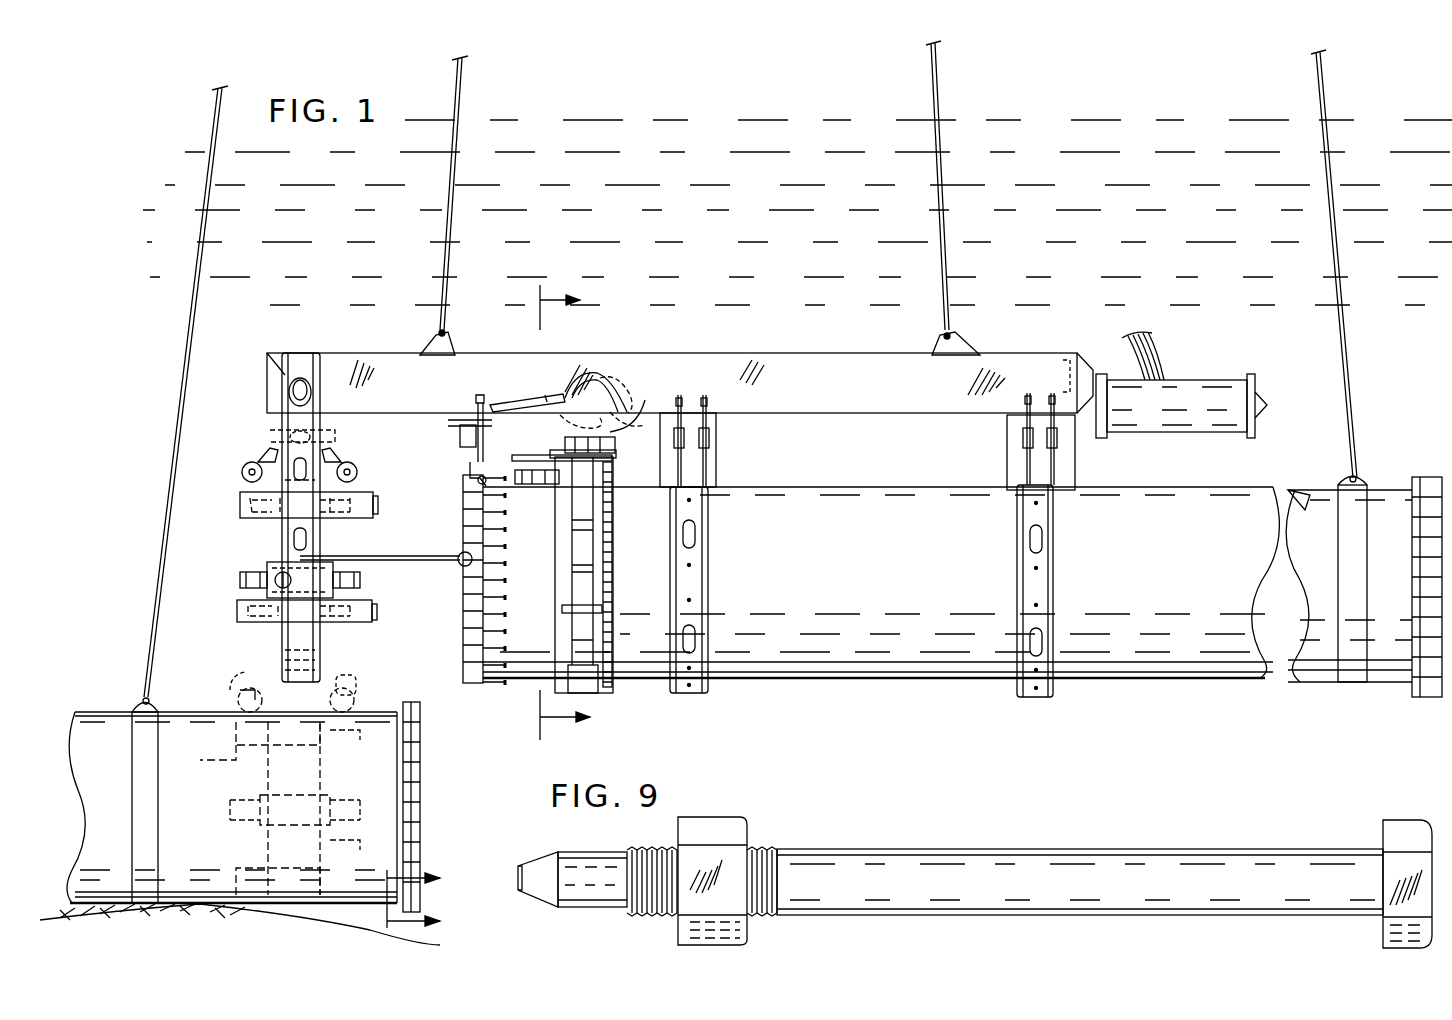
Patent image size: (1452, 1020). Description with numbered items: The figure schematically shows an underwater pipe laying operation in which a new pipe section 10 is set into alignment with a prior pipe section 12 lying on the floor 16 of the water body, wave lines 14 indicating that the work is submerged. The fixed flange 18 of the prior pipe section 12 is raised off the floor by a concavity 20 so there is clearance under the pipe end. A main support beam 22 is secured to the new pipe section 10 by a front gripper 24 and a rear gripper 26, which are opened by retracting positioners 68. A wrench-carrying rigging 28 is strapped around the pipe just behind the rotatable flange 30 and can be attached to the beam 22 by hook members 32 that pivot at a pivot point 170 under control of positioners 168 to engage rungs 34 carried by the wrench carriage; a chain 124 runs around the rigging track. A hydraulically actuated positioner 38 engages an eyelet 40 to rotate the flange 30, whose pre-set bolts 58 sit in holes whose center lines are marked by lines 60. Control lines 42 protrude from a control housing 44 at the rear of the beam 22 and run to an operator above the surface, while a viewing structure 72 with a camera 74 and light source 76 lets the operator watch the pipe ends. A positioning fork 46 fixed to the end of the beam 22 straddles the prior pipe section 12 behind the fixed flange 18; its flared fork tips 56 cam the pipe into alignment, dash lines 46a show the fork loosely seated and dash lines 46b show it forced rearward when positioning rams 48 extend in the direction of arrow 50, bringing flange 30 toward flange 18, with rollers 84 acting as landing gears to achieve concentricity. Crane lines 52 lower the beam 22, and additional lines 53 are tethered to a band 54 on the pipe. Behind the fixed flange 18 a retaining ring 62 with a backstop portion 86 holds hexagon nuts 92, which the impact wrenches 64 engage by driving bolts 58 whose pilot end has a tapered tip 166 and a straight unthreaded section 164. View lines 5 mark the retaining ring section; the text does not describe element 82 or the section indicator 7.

In FIG. 1, the new pipe section 10 is at (1188, 680).
In FIG. 1, the prior pipe section 12 is at (196, 718).
In FIG. 1, the wave lines 14 is at (296, 244).
In FIG. 1, the floor 16 is at (172, 898).
In FIG. 1, the fixed flange 18 is at (1425, 700).
In FIG. 1, the concavity 20 is at (440, 945).
In FIG. 1, the main support beam 22 is at (829, 362).
In FIG. 1, the front gripper 24 is at (708, 586).
In FIG. 1, the rear gripper 26 is at (1055, 588).
In FIG. 1, the wrench-carrying rigging 28 is at (612, 566).
In FIG. 1, the rotatable flange 30 is at (472, 684).
In FIG. 1, the hook members 32 is at (605, 380).
In FIG. 1, the rungs 34 is at (618, 432).
In FIG. 1, the hydraulically actuated positioner 38 is at (478, 415).
In FIG. 1, the eyelet 40 is at (468, 482).
In FIG. 1, the control lines 42 is at (1160, 356).
In FIG. 1, the control housing 44 is at (1188, 432).
In FIG. 1, the positioning fork 46 is at (258, 412).
In FIG. 1, the dash lines 46a is at (266, 758).
In FIG. 1, the dash lines 46b is at (262, 776).
In FIG. 1, the positioning rams 48 is at (252, 520).
In FIG. 1, the arrow 50 is at (232, 504).
In FIG. 1, the lines 52 is at (452, 190).
In FIG. 1, the additional lines 53 is at (185, 298).
In FIG. 1, the band 54 is at (1345, 490).
In FIG. 1, the fork tips 56 is at (295, 672).
In FIG. 1, the bolts 58 is at (510, 574).
In FIG. 9, the bolts 58 is at (1068, 850).
In FIG. 1, the lines 60 is at (462, 640).
In FIG. 1, the retaining ring 62 is at (1400, 684).
In FIG. 1, the impact wrenches 64 is at (535, 480).
In FIG. 1, the positioners 68 is at (712, 454).
In FIG. 1, the viewing structure 72 is at (445, 430).
In FIG. 1, the camera 74 is at (466, 466).
In FIG. 1, the light source 76 is at (486, 446).
In FIG. 1, the block 82 is at (280, 556).
In FIG. 1, the rollers 84 is at (246, 466).
In FIG. 1, the backstop portion 86 is at (380, 710).
In FIG. 9, the hexagon nut 92 is at (747, 832).
In FIG. 1, the chain 124 is at (612, 626).
In FIG. 9, the straight unthreaded section 164 is at (602, 905).
In FIG. 9, the tapered tip 166 is at (538, 905).
In FIG. 1, the positioners 168 is at (528, 394).
In FIG. 1, the pivot point 170 is at (592, 398).
In FIG. 1, the view lines 5— 5 is at (402, 901).
In FIG. 1, the section line 7 is at (553, 509).